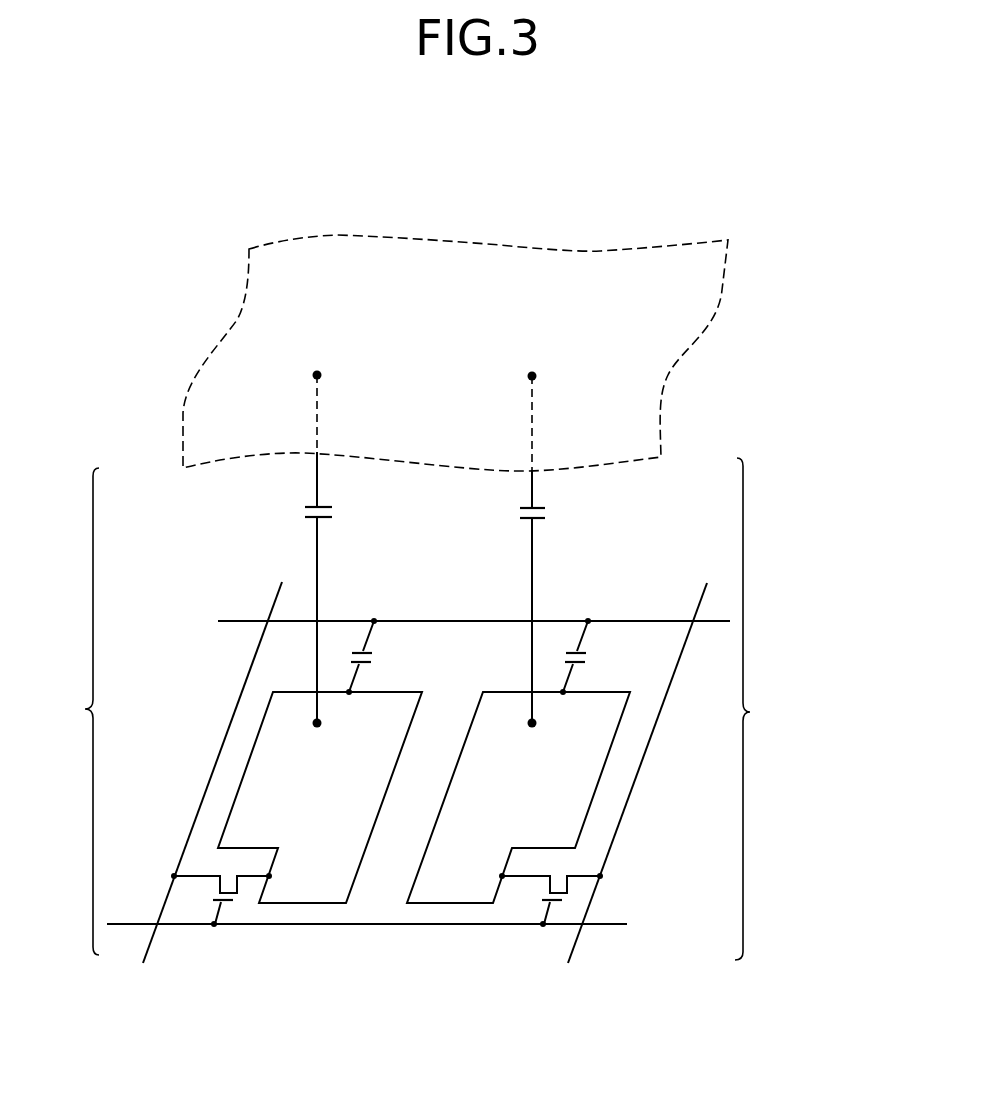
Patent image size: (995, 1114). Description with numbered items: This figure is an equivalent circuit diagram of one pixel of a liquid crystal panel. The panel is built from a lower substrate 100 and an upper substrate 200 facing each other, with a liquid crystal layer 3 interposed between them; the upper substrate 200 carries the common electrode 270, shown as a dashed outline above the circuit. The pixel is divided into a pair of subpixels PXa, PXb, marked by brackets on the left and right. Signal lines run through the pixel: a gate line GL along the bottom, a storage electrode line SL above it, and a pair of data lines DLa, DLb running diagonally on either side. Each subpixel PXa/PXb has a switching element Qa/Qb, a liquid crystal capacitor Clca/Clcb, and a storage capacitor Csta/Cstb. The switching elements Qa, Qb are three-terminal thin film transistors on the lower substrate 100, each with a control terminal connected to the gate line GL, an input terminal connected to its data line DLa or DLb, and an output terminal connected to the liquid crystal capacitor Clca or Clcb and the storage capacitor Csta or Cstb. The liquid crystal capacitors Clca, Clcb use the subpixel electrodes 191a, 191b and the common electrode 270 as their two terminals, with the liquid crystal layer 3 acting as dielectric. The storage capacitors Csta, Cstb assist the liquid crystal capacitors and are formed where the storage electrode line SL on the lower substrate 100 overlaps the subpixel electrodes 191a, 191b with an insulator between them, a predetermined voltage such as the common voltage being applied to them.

The liquid crystal layer 3 is at (812, 484).
The upper substrate 200 is at (784, 340).
The common electrode 270 is at (720, 298).
The lower substrate 100 is at (829, 745).
The subpixel electrode 191a is at (307, 909).
The subpixel electrode 191b is at (607, 765).
The subpixel PXa is at (67, 711).
The subpixel PXb is at (768, 709).
The storage electrode line SL is at (455, 620).
The gate line GL is at (385, 924).
The data line DLa is at (223, 760).
The data line DLb is at (648, 760).
The switching element Qa is at (221, 900).
The switching element Qb is at (551, 900).
The liquid crystal capacitor Clca is at (344, 590).
The liquid crystal capacitor Clcb is at (560, 599).
The storage capacitor Csta is at (387, 656).
The storage capacitor Cstb is at (602, 656).